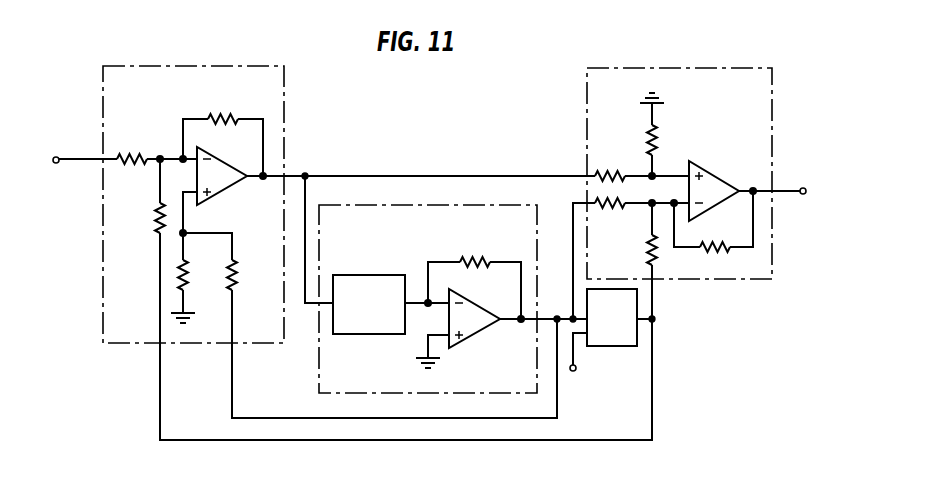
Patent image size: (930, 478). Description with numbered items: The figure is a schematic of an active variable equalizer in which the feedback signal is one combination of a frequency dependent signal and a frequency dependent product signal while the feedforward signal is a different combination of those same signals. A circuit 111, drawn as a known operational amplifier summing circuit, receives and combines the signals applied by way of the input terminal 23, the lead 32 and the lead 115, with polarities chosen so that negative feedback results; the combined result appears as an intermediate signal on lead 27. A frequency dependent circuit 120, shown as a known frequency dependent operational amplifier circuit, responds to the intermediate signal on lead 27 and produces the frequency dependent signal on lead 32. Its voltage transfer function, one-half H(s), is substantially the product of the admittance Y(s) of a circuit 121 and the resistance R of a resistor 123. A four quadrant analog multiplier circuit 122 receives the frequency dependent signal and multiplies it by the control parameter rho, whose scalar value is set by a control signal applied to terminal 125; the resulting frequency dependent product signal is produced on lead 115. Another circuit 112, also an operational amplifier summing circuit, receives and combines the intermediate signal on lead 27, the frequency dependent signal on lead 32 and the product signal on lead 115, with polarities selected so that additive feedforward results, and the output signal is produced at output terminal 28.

The input terminal 23 is at (58, 156).
The lead 27 is at (323, 176).
The output terminal 28 is at (804, 188).
The lead 32 is at (573, 314).
The circuit 111 is at (140, 101).
The circuit 112 is at (742, 100).
The lead 115 is at (653, 301).
The frequency dependent circuit 120 is at (370, 233).
The circuit 121 is at (374, 336).
The four quadrant analog multiplier circuit 122 is at (603, 347).
The resistor 123 is at (472, 257).
The terminal 125 is at (574, 372).